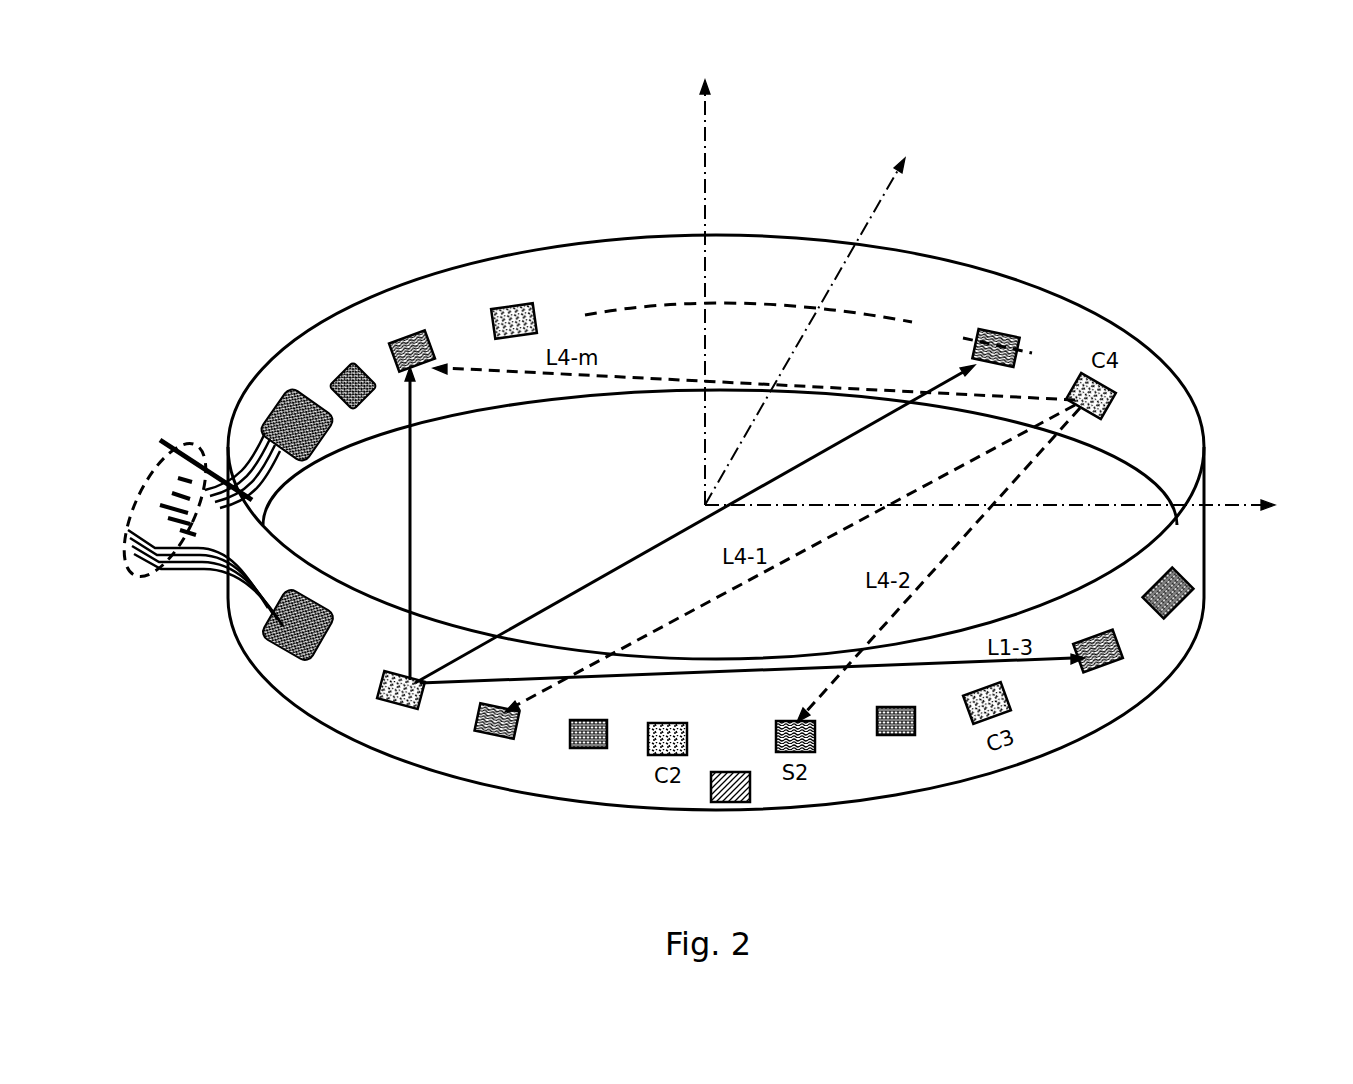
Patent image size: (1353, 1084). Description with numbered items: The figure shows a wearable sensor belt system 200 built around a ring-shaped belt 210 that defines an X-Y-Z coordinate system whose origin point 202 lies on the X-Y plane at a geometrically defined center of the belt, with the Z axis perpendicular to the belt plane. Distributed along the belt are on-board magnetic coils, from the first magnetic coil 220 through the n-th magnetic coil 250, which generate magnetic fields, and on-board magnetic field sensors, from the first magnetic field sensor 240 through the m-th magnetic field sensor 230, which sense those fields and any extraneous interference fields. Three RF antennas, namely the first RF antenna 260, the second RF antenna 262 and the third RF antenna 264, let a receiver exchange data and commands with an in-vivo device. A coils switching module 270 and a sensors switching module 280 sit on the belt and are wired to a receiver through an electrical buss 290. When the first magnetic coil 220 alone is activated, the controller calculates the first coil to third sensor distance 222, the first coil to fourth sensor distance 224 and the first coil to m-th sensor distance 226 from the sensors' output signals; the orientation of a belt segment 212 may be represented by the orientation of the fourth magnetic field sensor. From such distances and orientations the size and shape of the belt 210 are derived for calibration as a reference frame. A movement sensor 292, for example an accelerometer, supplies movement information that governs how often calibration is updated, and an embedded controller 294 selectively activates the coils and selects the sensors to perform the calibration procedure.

The wearable sensor belt system 200 is at (1015, 189).
The origin point 202 is at (705, 505).
The belt 210 is at (787, 237).
The segment of sensor belt 212 is at (1025, 351).
The magnetic coil C1 220 is at (380, 693).
The distance L1-3 222 is at (1047, 660).
The distance L1-4 224 is at (607, 571).
The distance L1-m 226 is at (411, 477).
The magnetic field sensor Sm 230 is at (425, 335).
The magnetic field sensor S1 240 is at (480, 720).
The magnetic coil Cn 250 is at (533, 308).
The RF antenna RF1 260 is at (567, 737).
The RF antenna RF2 262 is at (915, 720).
The RF antenna RF3 264 is at (1190, 590).
The coils switching module 270 is at (285, 643).
The sensors switching module 280 is at (302, 390).
The electrical buss 290 is at (192, 453).
The movement sensor 292 is at (750, 790).
The controller 294 is at (350, 363).